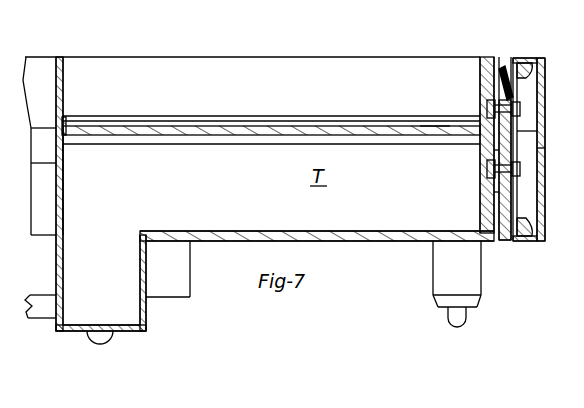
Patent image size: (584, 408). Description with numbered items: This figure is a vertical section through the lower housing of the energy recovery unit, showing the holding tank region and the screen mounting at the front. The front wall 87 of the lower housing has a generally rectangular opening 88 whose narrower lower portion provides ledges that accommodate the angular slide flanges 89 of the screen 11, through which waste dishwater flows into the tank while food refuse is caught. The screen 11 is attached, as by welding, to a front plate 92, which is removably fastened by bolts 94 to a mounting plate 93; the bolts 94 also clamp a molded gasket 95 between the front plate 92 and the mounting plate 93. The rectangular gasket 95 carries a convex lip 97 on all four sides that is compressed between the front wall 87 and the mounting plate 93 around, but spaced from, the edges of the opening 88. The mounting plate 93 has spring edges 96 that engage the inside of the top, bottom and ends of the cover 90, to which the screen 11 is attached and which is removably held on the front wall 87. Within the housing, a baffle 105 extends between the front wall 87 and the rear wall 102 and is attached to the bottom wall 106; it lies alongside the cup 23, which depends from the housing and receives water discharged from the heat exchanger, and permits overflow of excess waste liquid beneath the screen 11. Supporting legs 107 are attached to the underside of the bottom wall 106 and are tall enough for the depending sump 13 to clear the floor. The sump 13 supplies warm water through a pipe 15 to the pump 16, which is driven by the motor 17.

The motor 17 is at (40, 63).
The pump 16 is at (50, 188).
The rear wall 102 is at (58, 223).
The pipe 15 is at (56, 311).
The sump 13 is at (148, 313).
The cup 23 is at (190, 277).
The baffle 105 is at (231, 191).
The bottom wall 106 is at (355, 222).
The slide flanges 89 is at (351, 116).
The screen 11 is at (436, 130).
The front wall 87 is at (481, 80).
The convex lip 97 is at (503, 73).
The spring edges 96 is at (524, 63).
The cover 90 is at (542, 89).
The bolts 94 is at (520, 110).
The front plate 92 is at (523, 131).
The mounting plate 93 is at (540, 148).
The gasket 95 is at (483, 156).
The opening 88 is at (490, 191).
The supporting legs 107 is at (479, 288).